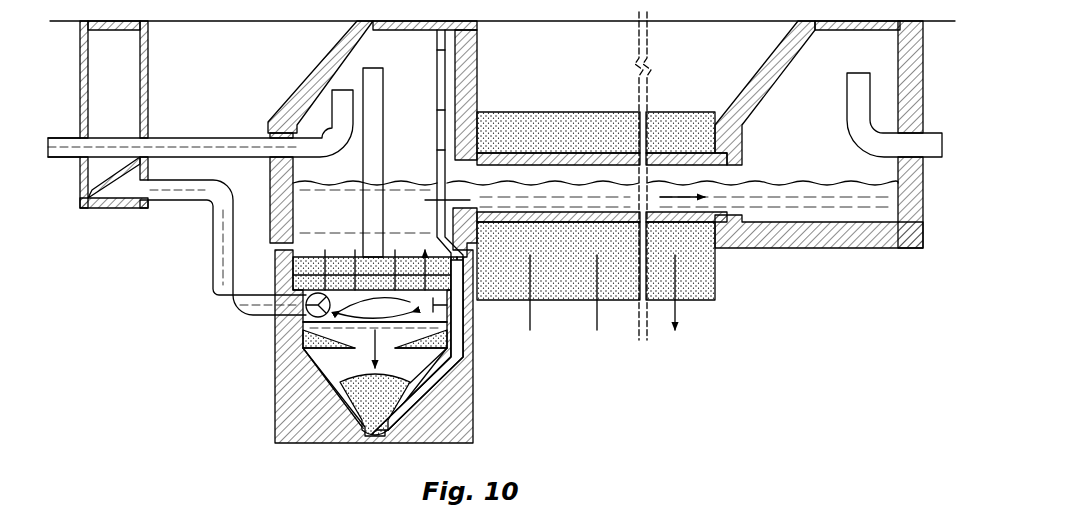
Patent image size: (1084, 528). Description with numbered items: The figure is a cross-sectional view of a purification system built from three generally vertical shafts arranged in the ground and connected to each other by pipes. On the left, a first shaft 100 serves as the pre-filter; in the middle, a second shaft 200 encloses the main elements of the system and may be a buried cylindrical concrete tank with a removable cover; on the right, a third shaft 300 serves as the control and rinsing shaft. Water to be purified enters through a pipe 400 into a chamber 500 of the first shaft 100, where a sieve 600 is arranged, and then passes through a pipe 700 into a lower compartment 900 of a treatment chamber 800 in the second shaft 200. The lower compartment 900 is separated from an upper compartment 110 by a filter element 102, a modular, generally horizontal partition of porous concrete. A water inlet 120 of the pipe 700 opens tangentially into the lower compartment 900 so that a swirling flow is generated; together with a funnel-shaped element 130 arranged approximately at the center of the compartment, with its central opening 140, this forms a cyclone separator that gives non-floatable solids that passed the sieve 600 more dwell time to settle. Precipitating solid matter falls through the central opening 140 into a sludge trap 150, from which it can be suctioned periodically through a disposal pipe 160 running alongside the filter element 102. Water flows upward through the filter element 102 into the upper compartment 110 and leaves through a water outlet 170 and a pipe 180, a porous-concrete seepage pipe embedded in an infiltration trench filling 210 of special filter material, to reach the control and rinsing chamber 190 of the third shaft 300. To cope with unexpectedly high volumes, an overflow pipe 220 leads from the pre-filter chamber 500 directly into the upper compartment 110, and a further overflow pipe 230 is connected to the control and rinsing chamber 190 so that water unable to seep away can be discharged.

The first shaft 100 is at (174, 80).
The filter element 102 is at (300, 268).
The upper compartment 110 is at (347, 229).
The water inlet 120 is at (270, 318).
The funnel-shaped element 130 is at (303, 337).
The central opening 140 is at (365, 347).
The sludge trap 150 is at (355, 400).
The disposal pipe 160 is at (445, 373).
The water outlet 170 is at (462, 165).
The pipe 180 is at (598, 147).
The control and rinsing chamber 190 is at (832, 163).
The second shaft 200 is at (497, 72).
The filling 210 is at (587, 262).
The overflow pipe 220 is at (203, 136).
The overflow pipe 230 is at (847, 83).
The third shaft 300 is at (938, 252).
The pipe 400 is at (68, 160).
The chamber 500 is at (140, 109).
The sieve 600 is at (122, 186).
The pipe 700 is at (192, 200).
The treatment chamber 800 is at (437, 85).
The lower compartment 900 is at (458, 313).